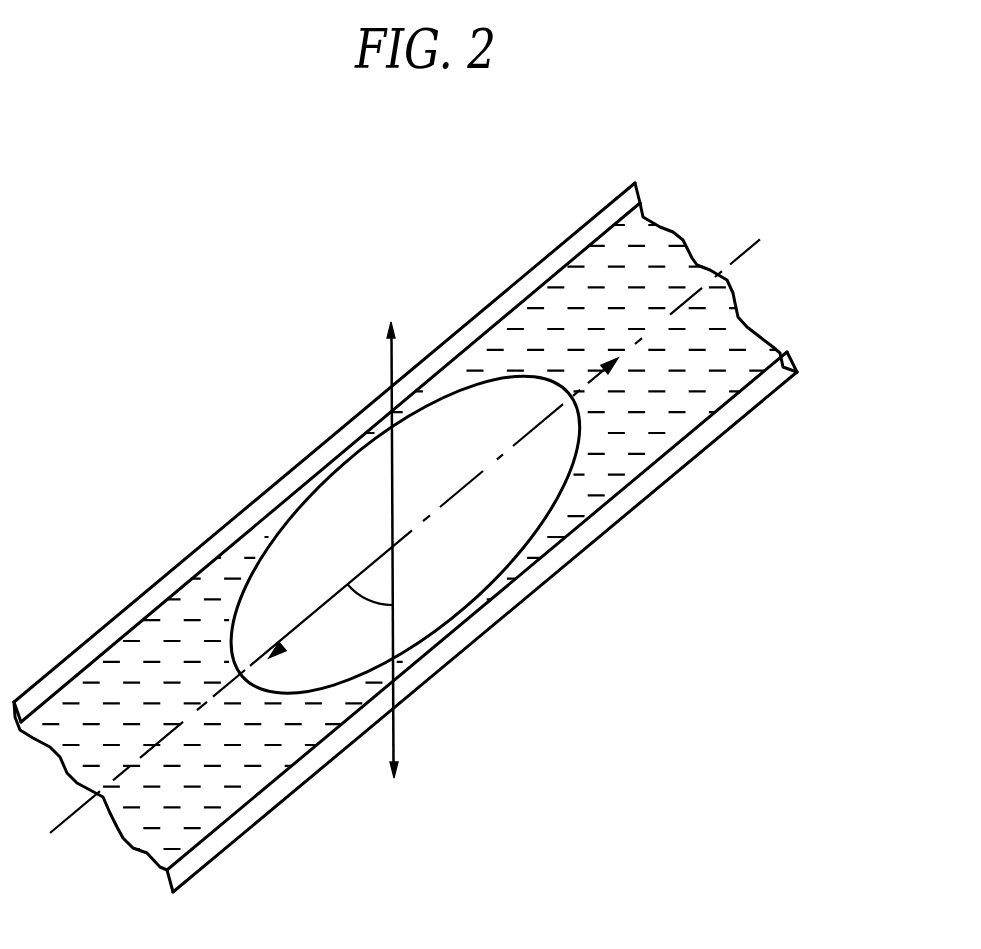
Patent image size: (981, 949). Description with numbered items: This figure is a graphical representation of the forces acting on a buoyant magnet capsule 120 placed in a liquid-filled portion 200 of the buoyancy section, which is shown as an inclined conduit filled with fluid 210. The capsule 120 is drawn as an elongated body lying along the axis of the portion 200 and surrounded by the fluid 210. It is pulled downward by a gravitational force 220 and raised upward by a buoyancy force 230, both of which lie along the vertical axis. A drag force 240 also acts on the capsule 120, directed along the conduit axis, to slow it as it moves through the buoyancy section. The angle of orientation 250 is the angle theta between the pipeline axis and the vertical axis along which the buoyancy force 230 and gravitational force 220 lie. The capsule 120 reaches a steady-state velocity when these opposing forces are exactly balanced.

The magnet capsule 120 is at (498, 538).
The portion of the buoyancy section 200 is at (283, 480).
The fluid 210 is at (647, 437).
The gravitational force 220 is at (420, 802).
The buoyancy force 230 is at (377, 293).
The drag force 240 is at (250, 607).
The angle of orientation 250 is at (375, 607).